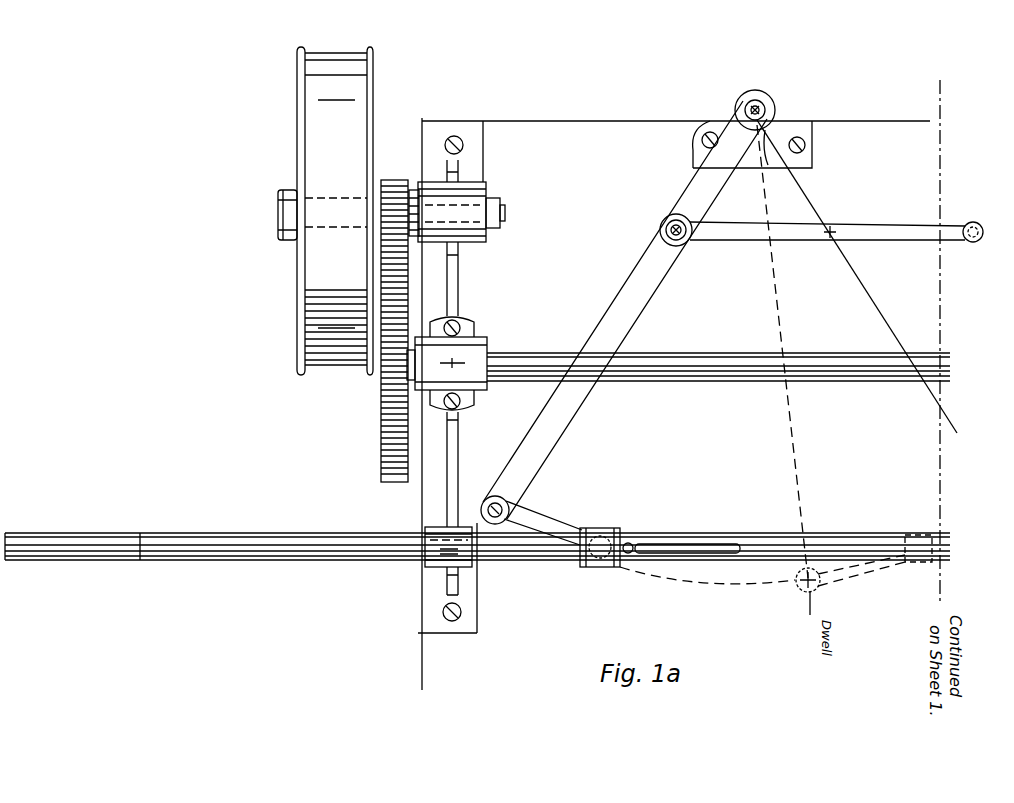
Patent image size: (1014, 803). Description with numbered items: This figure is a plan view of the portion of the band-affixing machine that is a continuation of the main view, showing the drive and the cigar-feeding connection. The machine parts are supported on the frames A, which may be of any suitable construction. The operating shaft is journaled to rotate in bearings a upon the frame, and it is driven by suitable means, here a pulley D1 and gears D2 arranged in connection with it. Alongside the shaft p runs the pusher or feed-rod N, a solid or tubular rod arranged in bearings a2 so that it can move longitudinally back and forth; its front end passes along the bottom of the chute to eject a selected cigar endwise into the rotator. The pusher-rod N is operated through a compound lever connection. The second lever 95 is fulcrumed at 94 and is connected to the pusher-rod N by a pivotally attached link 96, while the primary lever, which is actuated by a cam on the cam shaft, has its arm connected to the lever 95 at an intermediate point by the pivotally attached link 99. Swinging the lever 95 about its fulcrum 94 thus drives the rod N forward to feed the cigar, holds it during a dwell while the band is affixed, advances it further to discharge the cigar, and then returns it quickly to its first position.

The fulcrum 94 is at (755, 100).
The second lever 95 is at (630, 283).
The link 96 is at (540, 528).
The link 99 is at (880, 232).
The frames A is at (456, 281).
The bearings a is at (480, 350).
The bearings a2 is at (440, 555).
The pulley D1 is at (325, 211).
The gears D2 is at (381, 398).
The upper shaft p is at (709, 354).
The pusher or feed-rod N is at (762, 547).